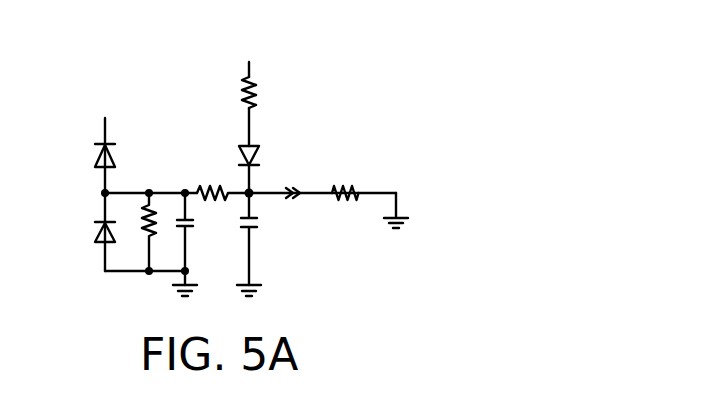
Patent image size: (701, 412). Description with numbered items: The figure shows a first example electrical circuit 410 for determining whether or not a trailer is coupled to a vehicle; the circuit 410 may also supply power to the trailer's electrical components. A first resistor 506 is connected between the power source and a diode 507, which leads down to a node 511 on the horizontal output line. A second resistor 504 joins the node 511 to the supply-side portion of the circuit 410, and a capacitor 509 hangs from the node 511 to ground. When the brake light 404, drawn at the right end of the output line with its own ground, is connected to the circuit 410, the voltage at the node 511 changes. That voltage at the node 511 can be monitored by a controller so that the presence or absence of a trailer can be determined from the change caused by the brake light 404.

The circuit 410 is at (493, 28).
The second resistor 504 is at (206, 186).
The first resistor 506 is at (258, 110).
The diode 507 is at (257, 158).
The capacitor 509 is at (253, 230).
The node 511 is at (254, 199).
The brake light 404 is at (364, 190).